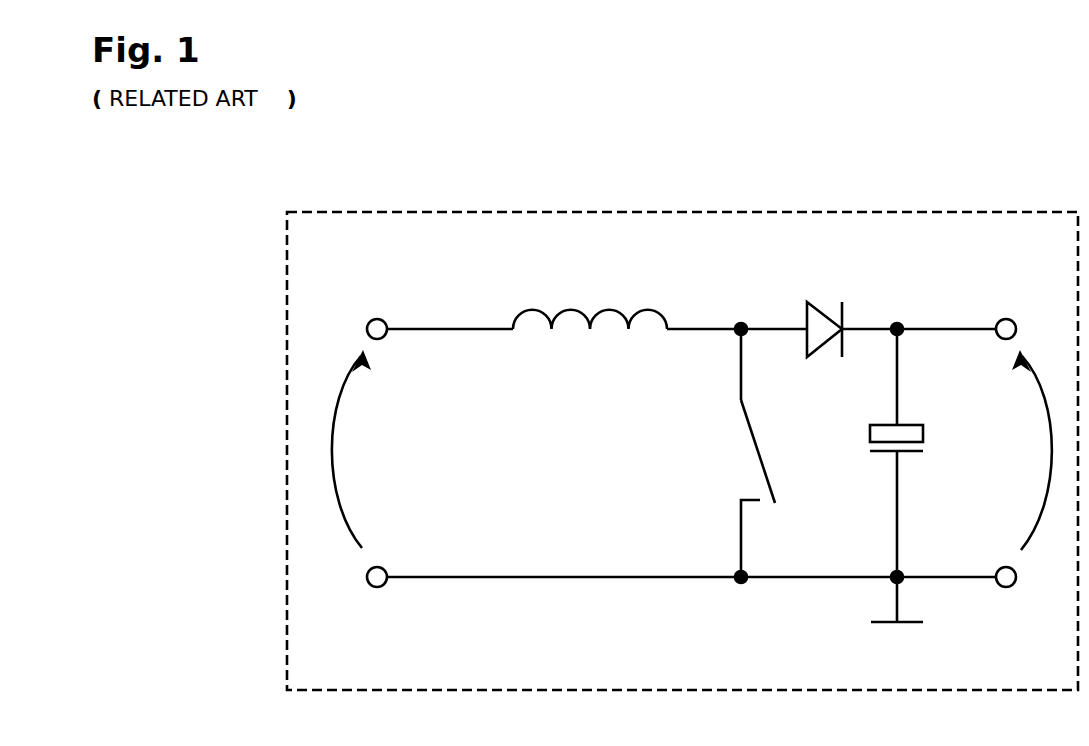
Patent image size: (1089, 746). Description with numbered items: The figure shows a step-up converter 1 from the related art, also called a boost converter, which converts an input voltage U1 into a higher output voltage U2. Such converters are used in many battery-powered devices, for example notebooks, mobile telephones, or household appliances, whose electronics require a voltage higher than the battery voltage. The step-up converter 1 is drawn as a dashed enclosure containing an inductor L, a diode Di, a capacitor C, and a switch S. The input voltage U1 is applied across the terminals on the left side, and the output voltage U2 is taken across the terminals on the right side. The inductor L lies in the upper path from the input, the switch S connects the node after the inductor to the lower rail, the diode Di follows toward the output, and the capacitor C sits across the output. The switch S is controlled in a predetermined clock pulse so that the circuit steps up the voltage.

The step-up converter 1 is at (722, 212).
The inductor L is at (609, 310).
The diode Di is at (826, 314).
The switch S is at (758, 453).
The capacitor C is at (870, 434).
The input voltage U1 is at (331, 460).
The output voltage U2 is at (1052, 454).